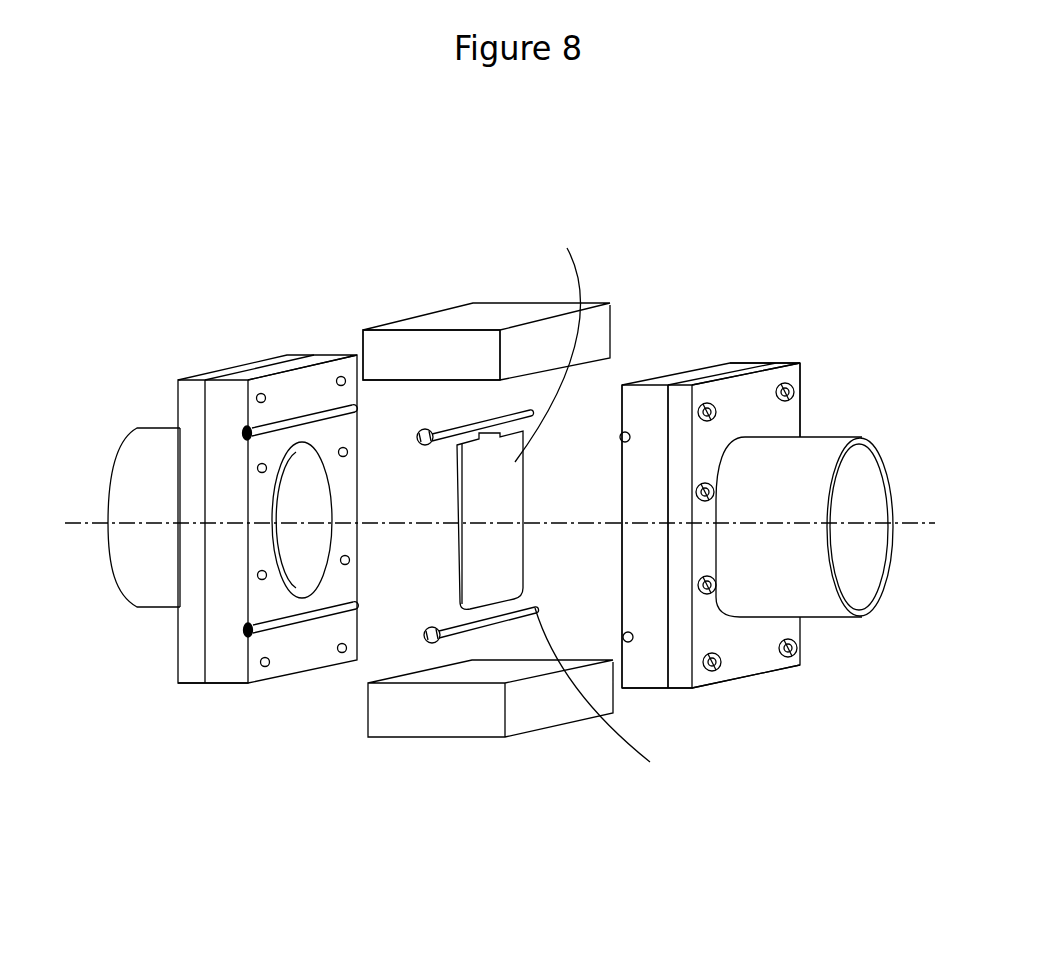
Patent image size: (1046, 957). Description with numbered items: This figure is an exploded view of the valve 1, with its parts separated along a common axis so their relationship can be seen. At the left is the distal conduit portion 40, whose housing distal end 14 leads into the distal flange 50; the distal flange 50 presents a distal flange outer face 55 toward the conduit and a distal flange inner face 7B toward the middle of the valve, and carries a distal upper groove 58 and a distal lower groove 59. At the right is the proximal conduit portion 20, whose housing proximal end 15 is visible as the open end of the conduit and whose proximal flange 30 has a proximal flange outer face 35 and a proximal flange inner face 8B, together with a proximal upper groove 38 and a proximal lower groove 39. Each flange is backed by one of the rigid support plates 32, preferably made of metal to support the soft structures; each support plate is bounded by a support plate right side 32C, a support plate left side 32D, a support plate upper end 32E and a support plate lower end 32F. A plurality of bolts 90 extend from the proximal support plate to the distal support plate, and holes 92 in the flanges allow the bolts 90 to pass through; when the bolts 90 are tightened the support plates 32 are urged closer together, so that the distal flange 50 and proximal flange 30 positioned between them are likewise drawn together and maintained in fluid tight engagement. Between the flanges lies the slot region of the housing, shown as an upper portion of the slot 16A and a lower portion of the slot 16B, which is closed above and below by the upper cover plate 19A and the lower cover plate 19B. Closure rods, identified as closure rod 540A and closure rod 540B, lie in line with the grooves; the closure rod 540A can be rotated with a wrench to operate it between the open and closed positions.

The valve 1 is at (235, 260).
The housing distal end 14 is at (127, 447).
The housing proximal end 15 is at (887, 467).
The upper portion of the slot 16A is at (527, 450).
The lower portion of the slot 16B is at (472, 590).
The upper cover plate 19A is at (458, 305).
The lower cover plate 19B is at (450, 733).
The proximal conduit portion 20 is at (797, 448).
The proximal flange 30 is at (637, 608).
The support plates 32 is at (180, 688).
The support plate right side 32C is at (800, 412).
The support plate left side 32D is at (677, 645).
The support plate upper end 32E is at (757, 370).
The support plate lower end 32F is at (762, 673).
The proximal flange outer face 35 is at (667, 549).
The proximal upper groove 38 is at (621, 439).
The proximal lower groove 39 is at (625, 634).
The distal conduit portion 40 is at (143, 598).
The distal flange 50 is at (213, 594).
The distal flange outer face 55 is at (203, 414).
The distal upper groove 58 is at (355, 410).
The distal lower groove 59 is at (327, 610).
The distal flange inner face 7B is at (342, 473).
The proximal flange inner face 8B is at (620, 482).
The bolts 90 is at (798, 648).
The holes 92 is at (338, 376).
The closure rod 540A is at (559, 330).
The lower light path 540B is at (638, 700).